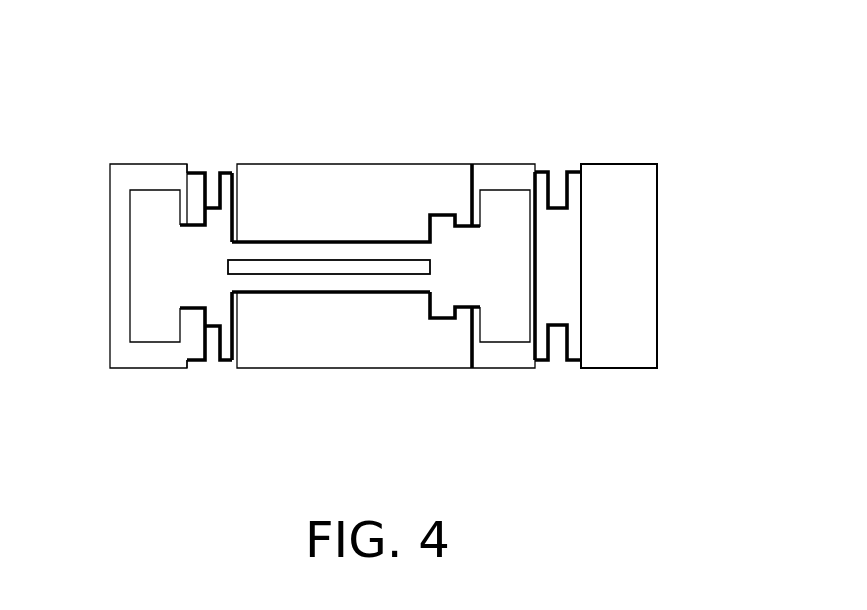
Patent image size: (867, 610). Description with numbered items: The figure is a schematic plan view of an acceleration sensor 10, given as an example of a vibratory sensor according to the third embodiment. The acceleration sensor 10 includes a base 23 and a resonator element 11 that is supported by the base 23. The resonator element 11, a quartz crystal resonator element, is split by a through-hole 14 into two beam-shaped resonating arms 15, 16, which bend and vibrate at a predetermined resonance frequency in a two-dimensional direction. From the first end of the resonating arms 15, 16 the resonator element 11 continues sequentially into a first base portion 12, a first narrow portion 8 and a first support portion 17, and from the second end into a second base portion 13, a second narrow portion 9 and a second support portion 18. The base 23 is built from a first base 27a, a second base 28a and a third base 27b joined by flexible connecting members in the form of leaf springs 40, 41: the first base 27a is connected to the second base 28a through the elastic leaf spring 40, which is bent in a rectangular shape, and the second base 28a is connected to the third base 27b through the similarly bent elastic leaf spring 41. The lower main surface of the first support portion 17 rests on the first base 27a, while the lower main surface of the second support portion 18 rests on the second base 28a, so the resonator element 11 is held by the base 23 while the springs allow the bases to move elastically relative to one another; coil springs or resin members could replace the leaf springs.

The acceleration sensor 10 is at (375, 228).
The base 23 is at (326, 244).
The resonator element 11 is at (270, 231).
The first base portion 12 is at (212, 293).
The second base portion 13 is at (442, 302).
The through-hole 14 is at (391, 267).
The resonating arm 15 is at (344, 253).
The resonating arm 16 is at (347, 282).
The first support portion 17 is at (153, 202).
The second support portion 18 is at (498, 200).
The leaf spring 40 is at (210, 195).
The leaf spring 41 is at (556, 190).
The first base 27a is at (118, 272).
The third base 27b is at (627, 357).
The second base 28a is at (520, 272).
The first narrow portion 8 is at (183, 268).
The second narrow portion 9 is at (468, 263).